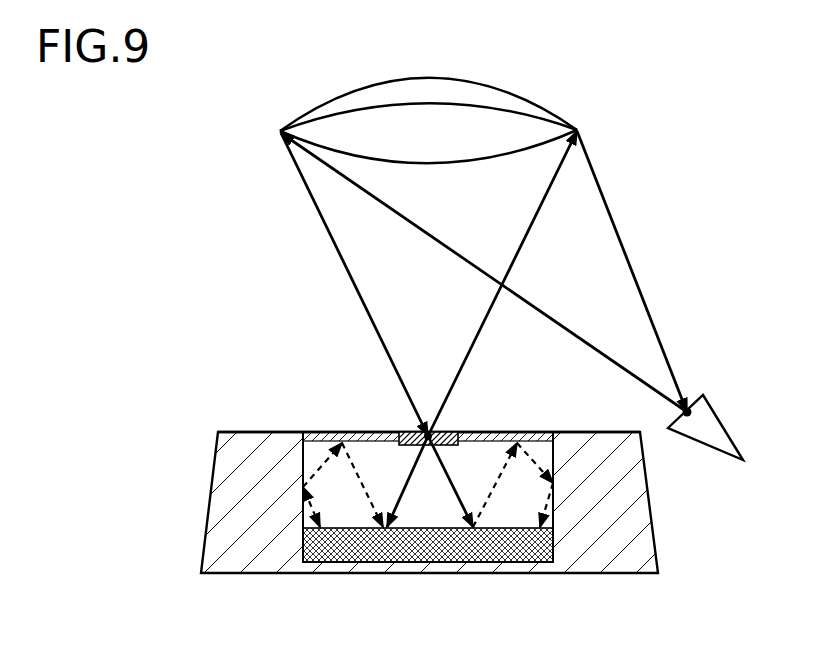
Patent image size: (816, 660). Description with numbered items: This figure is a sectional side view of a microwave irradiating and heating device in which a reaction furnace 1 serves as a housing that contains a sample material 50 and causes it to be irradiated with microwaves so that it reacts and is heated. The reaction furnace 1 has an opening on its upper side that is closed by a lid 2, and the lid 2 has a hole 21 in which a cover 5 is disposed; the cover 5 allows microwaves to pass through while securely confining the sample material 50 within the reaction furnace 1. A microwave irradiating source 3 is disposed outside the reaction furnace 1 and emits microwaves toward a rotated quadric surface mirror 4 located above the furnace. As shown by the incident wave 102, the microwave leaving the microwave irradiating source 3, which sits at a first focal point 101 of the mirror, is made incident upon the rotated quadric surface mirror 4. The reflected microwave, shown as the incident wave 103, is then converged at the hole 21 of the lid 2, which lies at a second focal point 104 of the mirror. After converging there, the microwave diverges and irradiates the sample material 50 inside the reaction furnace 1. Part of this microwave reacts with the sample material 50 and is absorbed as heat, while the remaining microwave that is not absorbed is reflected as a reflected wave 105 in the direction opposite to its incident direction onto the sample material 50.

The reaction furnace 1 is at (215, 484).
The lid 2 is at (318, 432).
The hole 21 is at (388, 432).
The cover 5 is at (413, 432).
The sample material 50 is at (360, 553).
The rotated quadric surface mirror 4 is at (545, 96).
The microwave irradiating source 3 is at (728, 430).
The first focal point 101 is at (690, 408).
The incident wave 102 is at (608, 208).
The incident wave 103 is at (324, 230).
The second focal point 104 is at (434, 430).
The reflected wave 105 is at (497, 487).